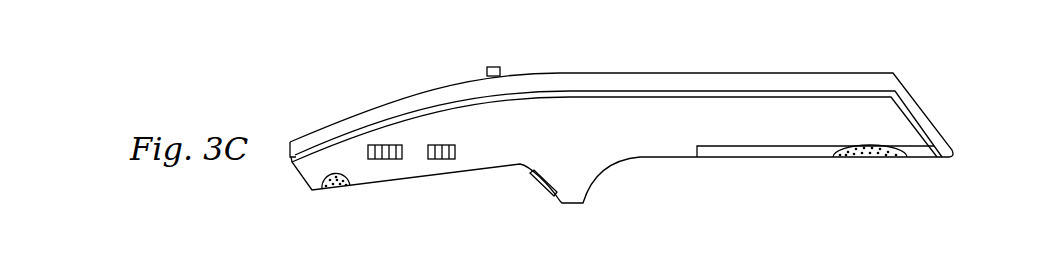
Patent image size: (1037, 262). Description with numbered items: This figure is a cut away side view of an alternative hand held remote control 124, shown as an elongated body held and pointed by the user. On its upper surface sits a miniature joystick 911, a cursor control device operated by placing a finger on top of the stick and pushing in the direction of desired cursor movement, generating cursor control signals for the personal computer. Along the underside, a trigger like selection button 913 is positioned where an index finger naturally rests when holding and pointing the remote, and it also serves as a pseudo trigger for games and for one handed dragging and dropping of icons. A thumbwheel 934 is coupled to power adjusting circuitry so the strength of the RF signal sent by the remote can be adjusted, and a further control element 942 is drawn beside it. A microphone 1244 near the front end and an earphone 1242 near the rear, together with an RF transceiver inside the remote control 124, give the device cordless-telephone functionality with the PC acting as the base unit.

The hand held remote control 124 is at (945, 86).
The miniature joystick 911 is at (487, 68).
The grooved element 942 is at (385, 159).
The thumbwheel 934 is at (438, 159).
The trigger like selection button 913 is at (533, 177).
The microphone 1244 is at (337, 189).
The earphone 1242 is at (870, 158).